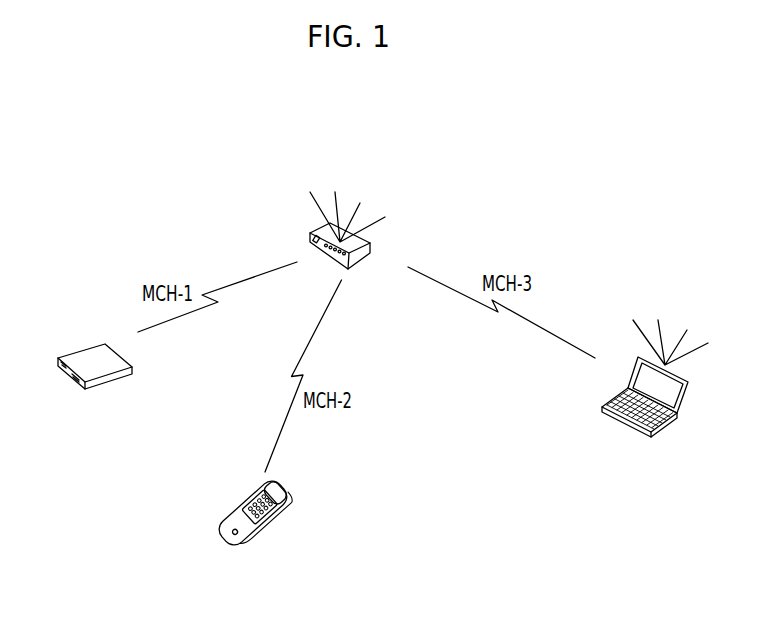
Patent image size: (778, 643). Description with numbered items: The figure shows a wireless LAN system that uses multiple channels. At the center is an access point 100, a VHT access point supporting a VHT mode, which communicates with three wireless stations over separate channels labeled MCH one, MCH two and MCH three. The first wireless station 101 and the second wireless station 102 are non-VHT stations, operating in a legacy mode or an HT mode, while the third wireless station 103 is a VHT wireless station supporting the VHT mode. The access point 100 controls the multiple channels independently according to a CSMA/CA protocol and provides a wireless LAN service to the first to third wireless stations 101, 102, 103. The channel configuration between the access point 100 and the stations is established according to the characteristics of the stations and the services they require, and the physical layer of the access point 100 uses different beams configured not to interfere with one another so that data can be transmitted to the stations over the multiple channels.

The access point 100 is at (373, 251).
The first wireless station 101 is at (77, 350).
The second wireless station 102 is at (230, 522).
The third wireless station 103 is at (683, 400).